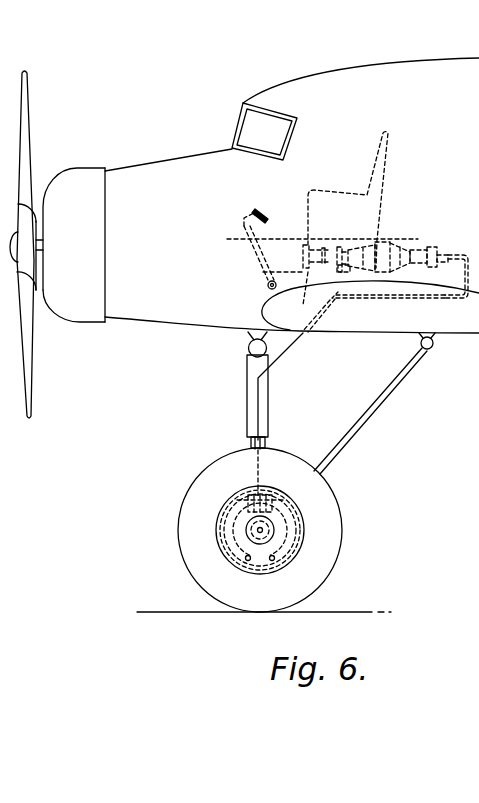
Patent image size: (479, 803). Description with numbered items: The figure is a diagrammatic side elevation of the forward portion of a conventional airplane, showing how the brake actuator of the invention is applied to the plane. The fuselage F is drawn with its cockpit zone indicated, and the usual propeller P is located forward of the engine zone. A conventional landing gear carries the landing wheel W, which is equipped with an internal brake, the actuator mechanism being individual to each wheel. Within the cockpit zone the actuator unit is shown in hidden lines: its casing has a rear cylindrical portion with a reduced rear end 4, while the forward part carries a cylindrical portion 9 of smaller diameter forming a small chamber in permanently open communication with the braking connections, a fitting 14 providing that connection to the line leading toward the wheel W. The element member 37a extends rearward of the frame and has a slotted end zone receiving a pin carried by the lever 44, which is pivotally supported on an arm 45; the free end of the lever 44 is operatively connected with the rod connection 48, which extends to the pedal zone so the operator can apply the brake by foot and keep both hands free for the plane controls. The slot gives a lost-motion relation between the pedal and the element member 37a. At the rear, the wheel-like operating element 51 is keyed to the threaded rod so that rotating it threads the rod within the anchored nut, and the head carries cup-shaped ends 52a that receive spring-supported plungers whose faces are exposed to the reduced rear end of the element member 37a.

The propeller P is at (33, 357).
The fuselage F is at (261, 195).
The landing wheel W is at (330, 502).
The rod connection 48 is at (268, 266).
The operating element 51 is at (302, 257).
The element member 37a is at (338, 247).
The arm 45 is at (350, 270).
The reduced rear end 4 is at (362, 249).
The cylindrical portion 9 is at (417, 251).
The fitting 14 is at (443, 255).
The lever 44 is at (345, 266).
The cup-shaped end 52a is at (326, 306).